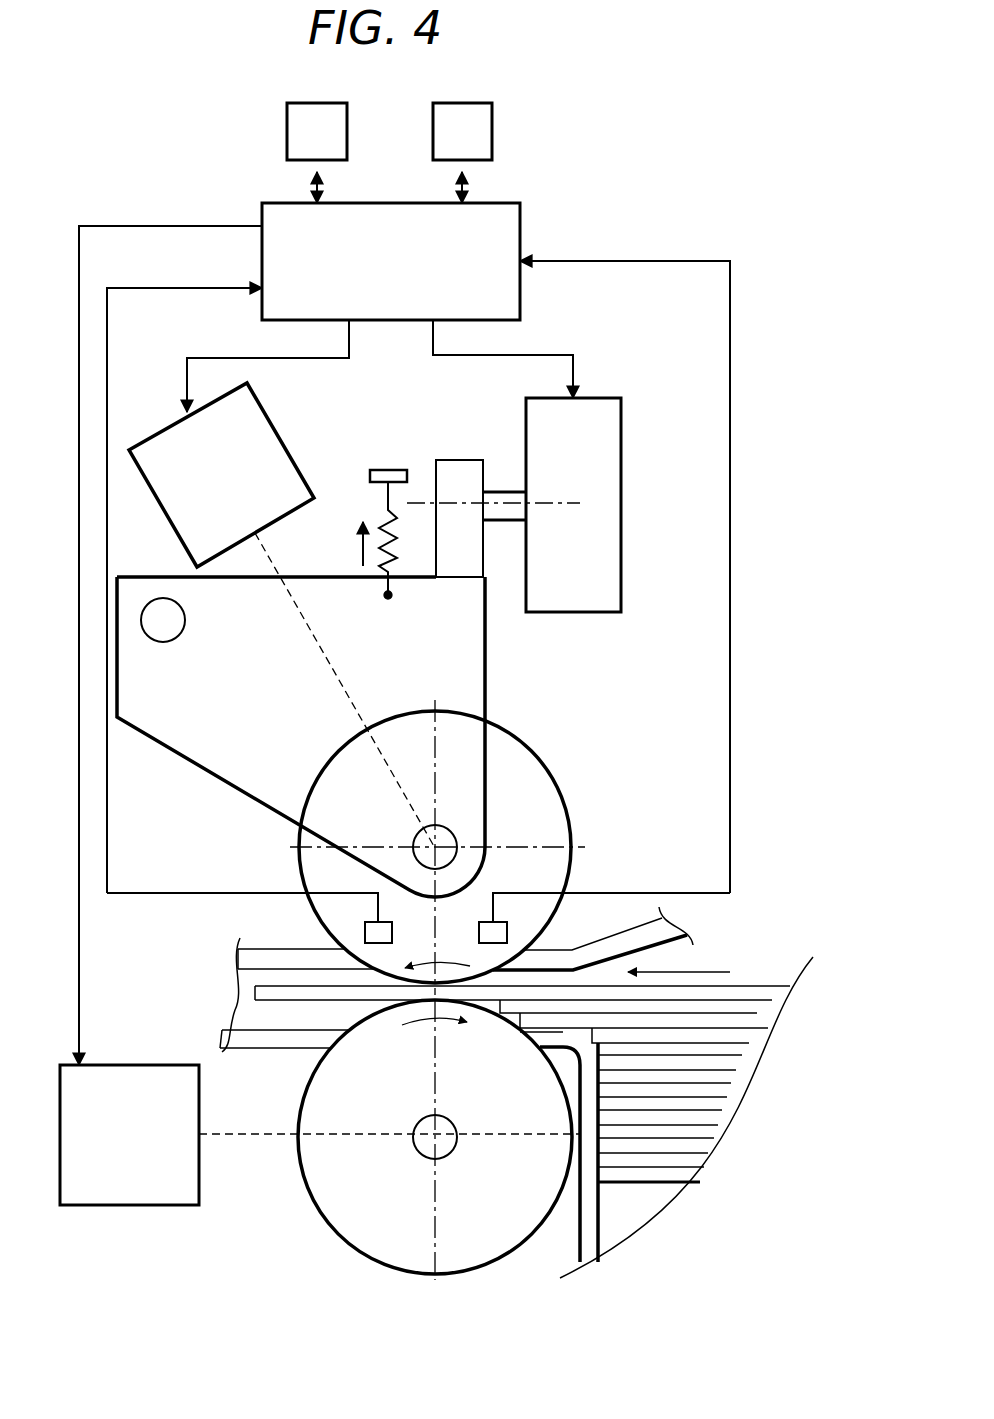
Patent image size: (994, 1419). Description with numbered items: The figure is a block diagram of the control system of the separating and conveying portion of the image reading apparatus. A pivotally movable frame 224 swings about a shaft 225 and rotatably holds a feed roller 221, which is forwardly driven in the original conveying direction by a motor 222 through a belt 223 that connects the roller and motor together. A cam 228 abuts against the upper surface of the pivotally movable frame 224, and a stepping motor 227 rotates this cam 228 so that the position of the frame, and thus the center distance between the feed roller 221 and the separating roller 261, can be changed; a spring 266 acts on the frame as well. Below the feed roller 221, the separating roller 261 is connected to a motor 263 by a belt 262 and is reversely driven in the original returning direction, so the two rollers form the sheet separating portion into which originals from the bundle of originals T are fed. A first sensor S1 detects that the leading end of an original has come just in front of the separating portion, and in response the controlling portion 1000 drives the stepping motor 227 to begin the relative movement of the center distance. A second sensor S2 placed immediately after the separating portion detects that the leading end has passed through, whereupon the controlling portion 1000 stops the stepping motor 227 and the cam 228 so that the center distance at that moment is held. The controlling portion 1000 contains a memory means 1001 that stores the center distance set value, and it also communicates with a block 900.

The memory means 1001 is at (300, 135).
The host computer 900 is at (465, 131).
The controlling portion 1000 is at (521, 233).
The motor 222 is at (255, 456).
The cam 228 is at (458, 476).
The stepping motor 227 is at (605, 503).
The spring 266 is at (380, 525).
The pivotally movable frame 224 is at (460, 680).
The shaft 225 is at (165, 620).
The belt 223 is at (330, 660).
The feed roller 221 is at (520, 827).
The second sensor S2 is at (380, 933).
The first sensor S1 is at (490, 933).
The bundle of originals T is at (745, 1063).
The separating roller 261 is at (360, 1235).
The belt 262 is at (255, 1134).
The motor 263 is at (148, 1080).